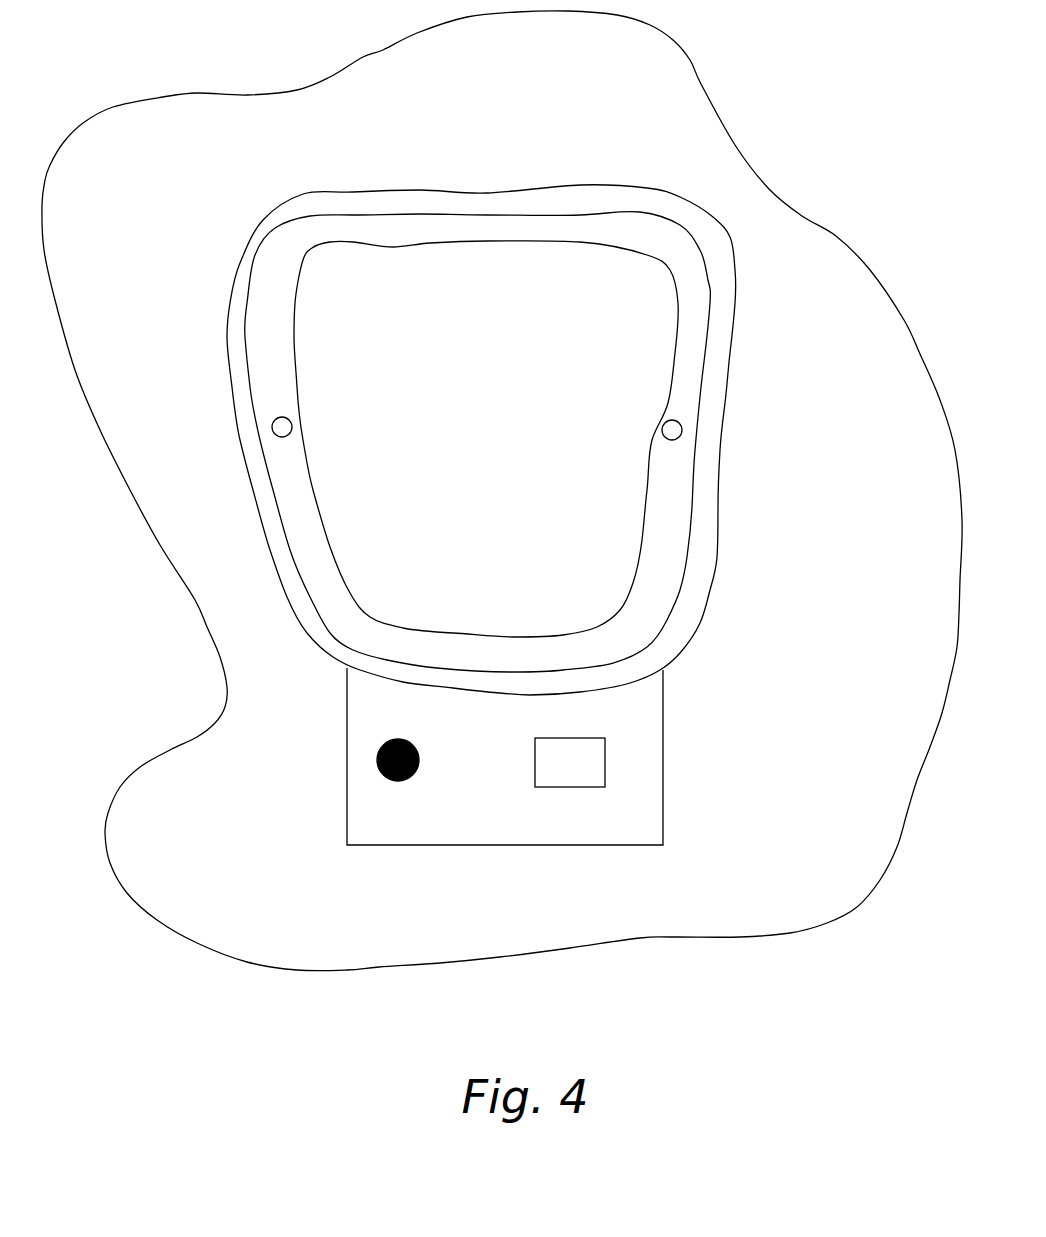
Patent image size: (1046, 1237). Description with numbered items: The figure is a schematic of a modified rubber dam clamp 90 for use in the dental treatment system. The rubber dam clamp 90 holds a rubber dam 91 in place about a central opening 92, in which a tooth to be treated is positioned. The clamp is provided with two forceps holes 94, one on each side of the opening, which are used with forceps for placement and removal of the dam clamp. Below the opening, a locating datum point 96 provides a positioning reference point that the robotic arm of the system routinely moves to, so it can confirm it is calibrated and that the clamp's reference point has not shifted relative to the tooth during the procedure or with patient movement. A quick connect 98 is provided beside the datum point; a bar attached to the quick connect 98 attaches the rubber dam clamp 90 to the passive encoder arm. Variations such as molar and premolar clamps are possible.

The rubber dam clamp 90 is at (561, 410).
The rubber dam 91 is at (159, 217).
The central opening 92 is at (451, 429).
The forceps holes 94 is at (282, 427).
The locating datum point 96 is at (398, 760).
The quick connect 98 is at (597, 768).